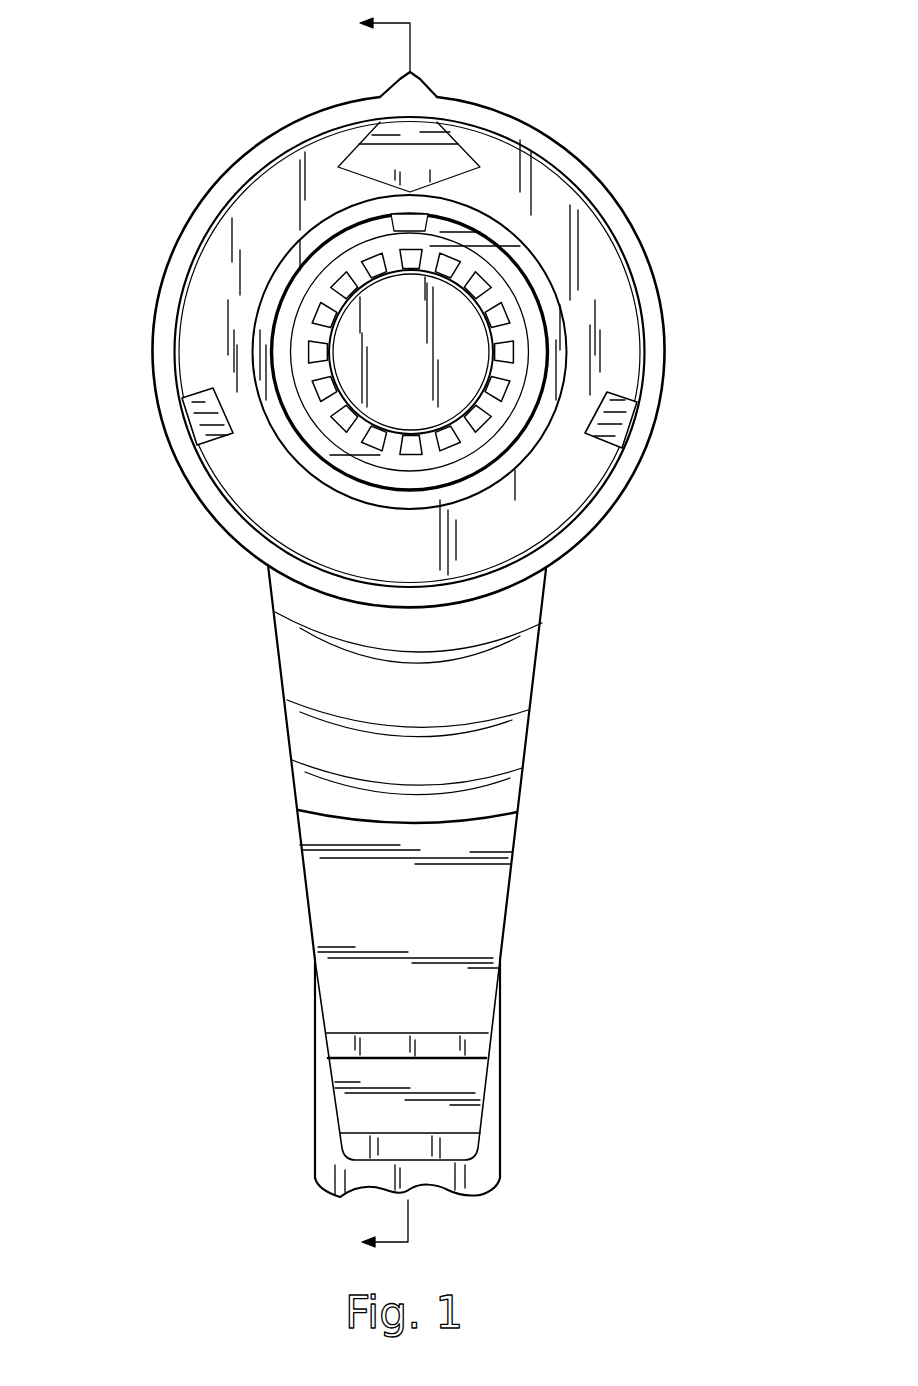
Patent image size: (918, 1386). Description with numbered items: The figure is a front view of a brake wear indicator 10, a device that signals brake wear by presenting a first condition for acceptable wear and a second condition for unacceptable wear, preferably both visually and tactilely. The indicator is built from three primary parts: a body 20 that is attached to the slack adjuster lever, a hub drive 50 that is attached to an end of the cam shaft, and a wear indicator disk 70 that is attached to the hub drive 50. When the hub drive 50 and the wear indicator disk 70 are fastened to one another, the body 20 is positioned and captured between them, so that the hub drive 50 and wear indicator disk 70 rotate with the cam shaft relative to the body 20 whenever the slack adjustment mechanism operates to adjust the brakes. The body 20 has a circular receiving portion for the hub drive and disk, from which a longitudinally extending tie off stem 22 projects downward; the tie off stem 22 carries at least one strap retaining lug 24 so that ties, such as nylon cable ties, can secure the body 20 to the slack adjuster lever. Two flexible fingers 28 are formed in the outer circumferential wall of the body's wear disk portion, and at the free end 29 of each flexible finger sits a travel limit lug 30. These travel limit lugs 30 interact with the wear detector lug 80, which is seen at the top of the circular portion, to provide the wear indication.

The brake wear indicator 10 is at (519, 82).
The body 20 is at (572, 160).
The tie off stem 22 is at (325, 745).
The strap retaining lug 24 is at (478, 1048).
The flexible fingers 28 is at (160, 276).
The free end 29 is at (617, 423).
The travel limit lug 30 is at (200, 426).
The hub drive 50 is at (532, 303).
The wear indicator disk 70 is at (205, 357).
The wear detector lug 80 is at (392, 147).